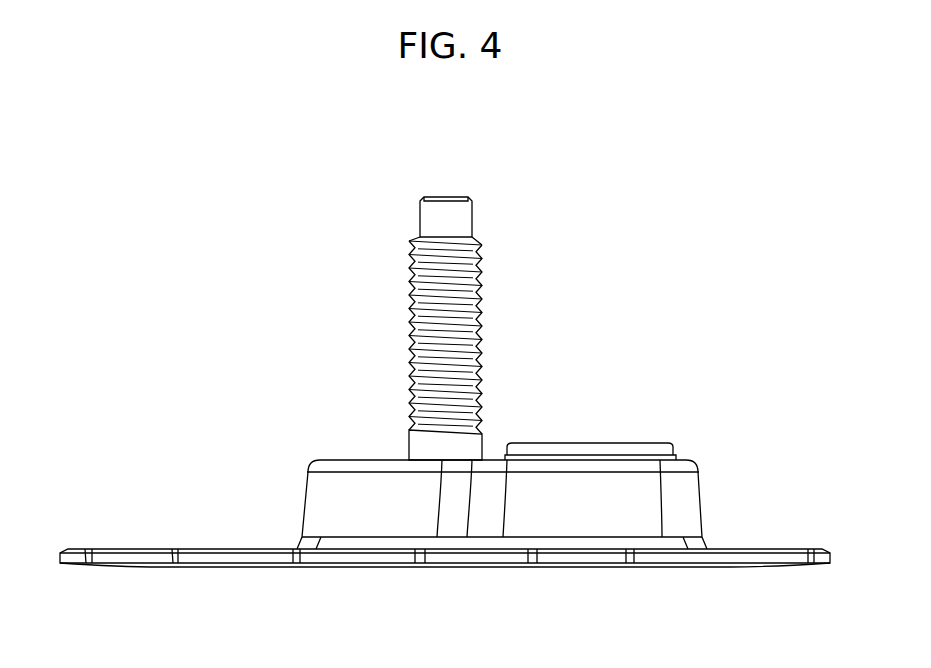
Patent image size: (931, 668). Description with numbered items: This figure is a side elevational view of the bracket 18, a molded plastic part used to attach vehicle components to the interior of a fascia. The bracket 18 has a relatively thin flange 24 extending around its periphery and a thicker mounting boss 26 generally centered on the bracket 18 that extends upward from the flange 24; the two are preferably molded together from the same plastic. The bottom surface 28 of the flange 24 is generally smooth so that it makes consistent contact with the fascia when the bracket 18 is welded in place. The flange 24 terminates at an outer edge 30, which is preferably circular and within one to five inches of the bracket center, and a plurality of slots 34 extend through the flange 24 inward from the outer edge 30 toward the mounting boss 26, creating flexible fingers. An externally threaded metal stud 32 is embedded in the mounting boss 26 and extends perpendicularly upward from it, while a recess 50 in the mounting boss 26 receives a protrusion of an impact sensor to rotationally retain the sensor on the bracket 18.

The bracket 18 is at (703, 243).
The flange 24 is at (200, 549).
The mounting boss 26 is at (345, 460).
The bottom surface 28 is at (252, 568).
The outer edge 30 is at (60, 558).
The stud 32 is at (483, 328).
The slots 34 is at (305, 563).
The recess 50 is at (592, 443).